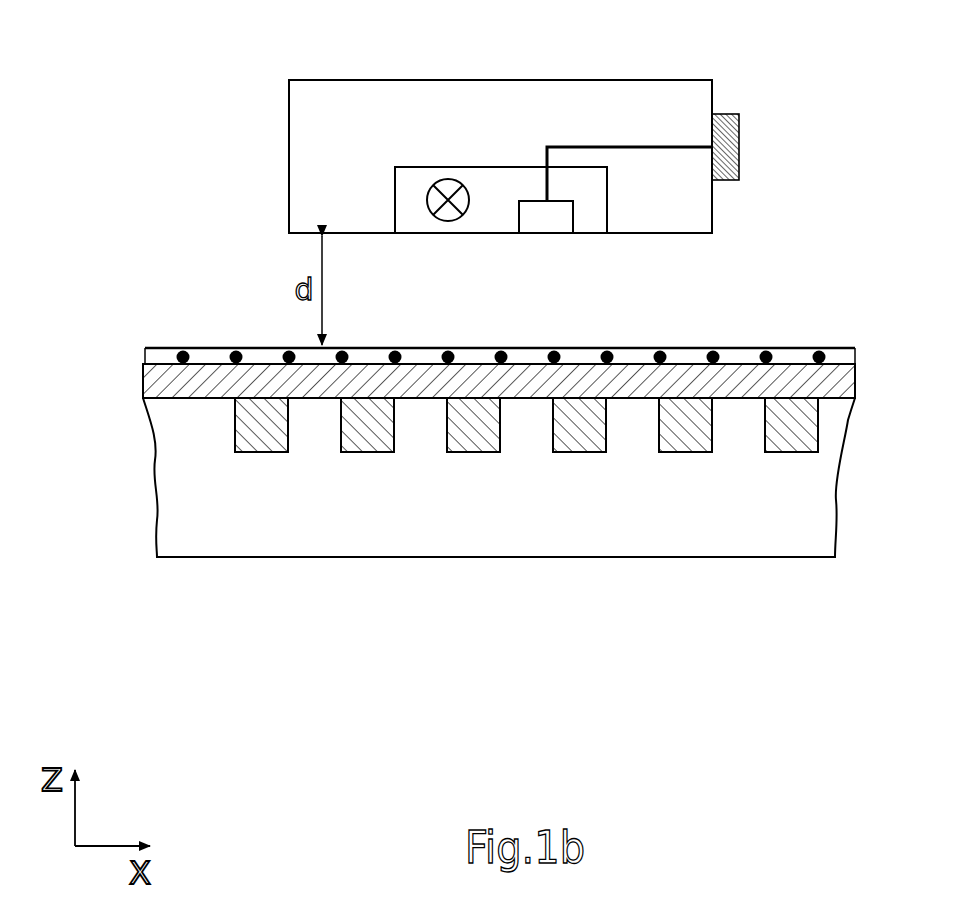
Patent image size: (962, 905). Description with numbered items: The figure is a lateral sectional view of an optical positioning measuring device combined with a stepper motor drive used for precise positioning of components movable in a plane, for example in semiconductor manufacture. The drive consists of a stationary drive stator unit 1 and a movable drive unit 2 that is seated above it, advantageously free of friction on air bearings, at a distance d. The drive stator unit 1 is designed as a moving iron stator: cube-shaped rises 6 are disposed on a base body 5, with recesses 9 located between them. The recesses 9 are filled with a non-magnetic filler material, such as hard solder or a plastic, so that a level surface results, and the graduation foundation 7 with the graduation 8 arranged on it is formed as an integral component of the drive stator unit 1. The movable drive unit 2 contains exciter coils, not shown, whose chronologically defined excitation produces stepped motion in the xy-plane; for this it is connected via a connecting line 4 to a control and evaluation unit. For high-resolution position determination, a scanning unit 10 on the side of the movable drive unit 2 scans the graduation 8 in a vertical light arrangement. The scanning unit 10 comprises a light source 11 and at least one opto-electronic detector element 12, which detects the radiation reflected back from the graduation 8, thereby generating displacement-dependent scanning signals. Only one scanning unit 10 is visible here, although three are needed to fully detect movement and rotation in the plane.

The drive stator unit 1 is at (532, 493).
The movable drive unit 2 is at (585, 104).
The connecting line 4 is at (673, 145).
The base body 5 is at (260, 543).
The cube-shaped rises 6 is at (428, 432).
The graduation foundation 7 is at (842, 382).
The graduation 8 is at (163, 348).
The recesses 9 is at (810, 430).
The scanning unit 10 is at (443, 165).
The light source 11 is at (448, 212).
The opto-electronic detector element 12 is at (549, 222).